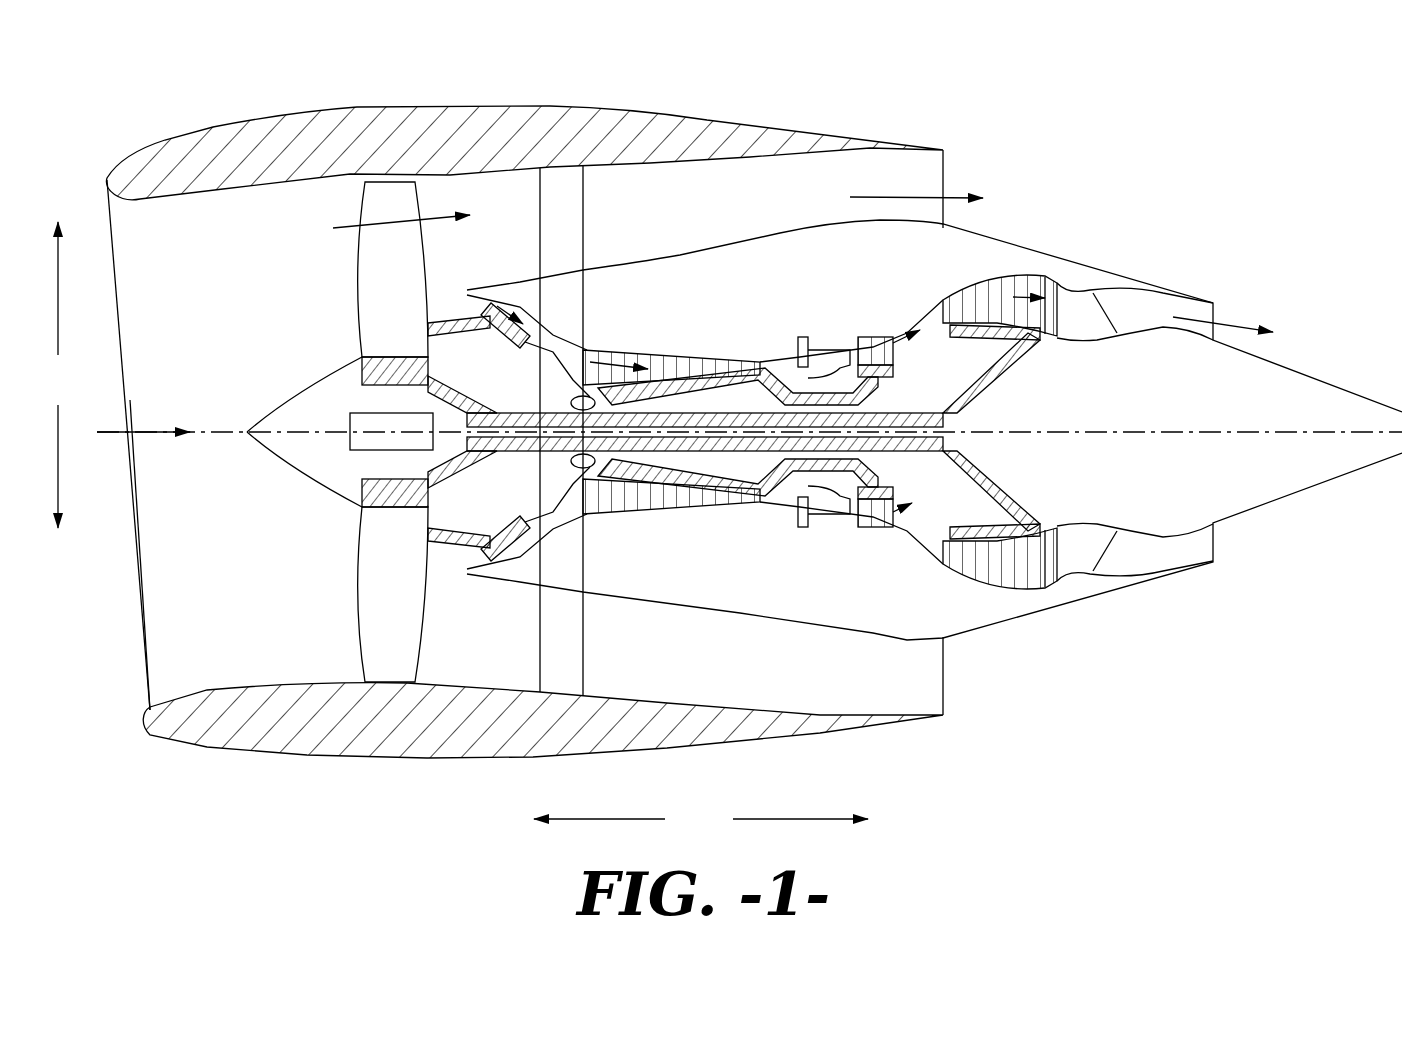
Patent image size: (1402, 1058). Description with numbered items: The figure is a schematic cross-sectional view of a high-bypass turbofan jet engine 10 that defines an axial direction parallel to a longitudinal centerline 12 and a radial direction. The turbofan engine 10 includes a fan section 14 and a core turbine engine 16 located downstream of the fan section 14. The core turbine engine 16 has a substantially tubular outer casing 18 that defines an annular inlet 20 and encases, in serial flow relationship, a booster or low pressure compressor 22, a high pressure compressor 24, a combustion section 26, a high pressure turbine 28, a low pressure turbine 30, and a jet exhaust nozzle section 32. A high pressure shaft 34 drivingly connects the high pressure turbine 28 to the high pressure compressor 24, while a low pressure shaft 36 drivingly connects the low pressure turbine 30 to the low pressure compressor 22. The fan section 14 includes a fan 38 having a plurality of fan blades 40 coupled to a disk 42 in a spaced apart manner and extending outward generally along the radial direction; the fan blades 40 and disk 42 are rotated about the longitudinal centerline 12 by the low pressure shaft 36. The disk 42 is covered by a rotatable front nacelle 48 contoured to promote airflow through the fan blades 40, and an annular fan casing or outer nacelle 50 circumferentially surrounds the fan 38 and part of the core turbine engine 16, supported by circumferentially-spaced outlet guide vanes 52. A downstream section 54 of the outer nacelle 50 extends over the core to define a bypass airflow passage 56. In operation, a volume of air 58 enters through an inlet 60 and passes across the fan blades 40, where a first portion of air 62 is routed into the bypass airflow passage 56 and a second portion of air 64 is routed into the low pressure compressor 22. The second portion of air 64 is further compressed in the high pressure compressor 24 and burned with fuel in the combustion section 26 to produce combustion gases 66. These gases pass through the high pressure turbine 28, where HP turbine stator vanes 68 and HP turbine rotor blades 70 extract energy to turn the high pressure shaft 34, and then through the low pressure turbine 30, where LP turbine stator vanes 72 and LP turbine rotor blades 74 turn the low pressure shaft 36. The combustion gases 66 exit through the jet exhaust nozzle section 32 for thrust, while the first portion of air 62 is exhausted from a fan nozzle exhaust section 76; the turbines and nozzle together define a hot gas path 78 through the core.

The turbofan engine 10 is at (1197, 178).
The longitudinal centerline 12 is at (1130, 420).
The fan section 14 is at (545, 420).
The core turbine engine 16 is at (915, 437).
The outer casing 18 is at (783, 627).
The annular inlet 20 is at (480, 557).
The low pressure compressor 22 is at (545, 527).
The high pressure compressor 24 is at (620, 507).
The combustion section 26 is at (820, 510).
The high pressure turbine 28 is at (913, 510).
The low pressure turbine 30 is at (1043, 588).
The jet exhaust nozzle section 32 is at (1215, 312).
The high pressure shaft 34 is at (870, 378).
The low pressure shaft 36 is at (537, 403).
The fan 38 is at (335, 432).
The fan blades 40 is at (357, 627).
The disk 42 is at (357, 367).
The rotatable front nacelle 48 is at (280, 400).
The outer nacelle 50 is at (427, 760).
The outlet guide vanes 52 is at (585, 188).
The downstream section 54 is at (748, 118).
The bypass airflow passage 56 is at (626, 428).
The volume of air 58 is at (143, 430).
The inlet 60 is at (147, 670).
The first portion of air 62 is at (353, 230).
The second portion of air 64 is at (450, 303).
The combustion gases 66 is at (877, 350).
The HP turbine stator vanes 68 is at (862, 513).
The HP turbine rotor blades 70 is at (877, 520).
The LP turbine stator vanes 72 is at (953, 560).
The LP turbine rotor blades 74 is at (963, 567).
The fan nozzle exhaust section 76 is at (948, 190).
The hot gas path 78 is at (930, 313).